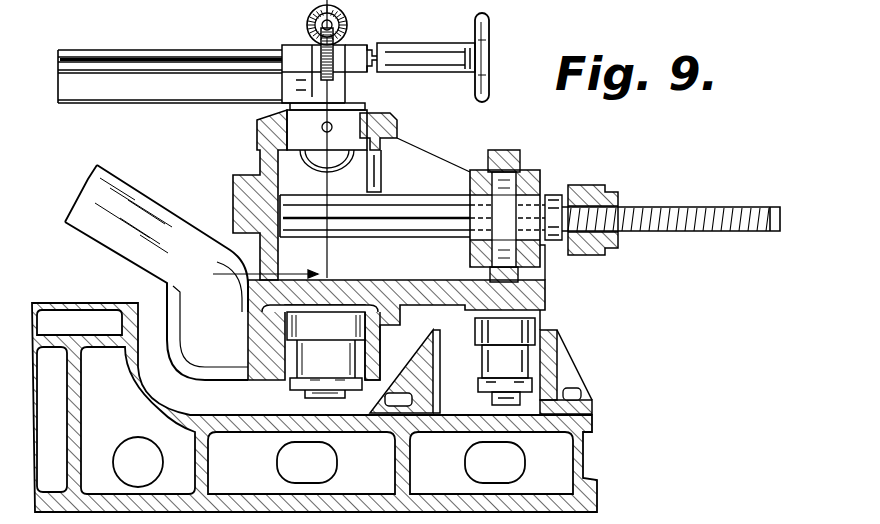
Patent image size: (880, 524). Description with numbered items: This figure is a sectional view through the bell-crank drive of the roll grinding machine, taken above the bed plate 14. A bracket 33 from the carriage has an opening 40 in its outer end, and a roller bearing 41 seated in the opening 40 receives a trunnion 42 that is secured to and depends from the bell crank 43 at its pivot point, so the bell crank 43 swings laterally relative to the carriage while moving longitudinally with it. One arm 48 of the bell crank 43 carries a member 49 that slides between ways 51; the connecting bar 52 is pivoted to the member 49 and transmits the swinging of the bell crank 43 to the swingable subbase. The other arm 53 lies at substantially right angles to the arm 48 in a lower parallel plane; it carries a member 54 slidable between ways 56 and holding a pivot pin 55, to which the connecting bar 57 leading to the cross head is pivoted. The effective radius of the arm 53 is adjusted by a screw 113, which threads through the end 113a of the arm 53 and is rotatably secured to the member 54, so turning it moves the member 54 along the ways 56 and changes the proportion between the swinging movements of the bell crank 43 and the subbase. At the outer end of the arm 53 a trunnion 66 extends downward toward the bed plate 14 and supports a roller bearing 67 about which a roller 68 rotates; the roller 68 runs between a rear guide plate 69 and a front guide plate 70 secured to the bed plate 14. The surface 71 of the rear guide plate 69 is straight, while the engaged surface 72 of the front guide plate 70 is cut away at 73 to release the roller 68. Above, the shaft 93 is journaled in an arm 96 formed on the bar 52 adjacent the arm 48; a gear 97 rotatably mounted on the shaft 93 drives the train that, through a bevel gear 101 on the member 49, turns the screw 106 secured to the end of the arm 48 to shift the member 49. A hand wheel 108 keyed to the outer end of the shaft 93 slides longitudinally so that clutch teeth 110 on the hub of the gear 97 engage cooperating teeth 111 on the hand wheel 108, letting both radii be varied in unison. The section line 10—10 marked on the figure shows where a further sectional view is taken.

The section line 10— 10 is at (260, 158).
The bed plate 14 is at (584, 466).
The bracket 33 is at (161, 222).
The opening 40 is at (281, 375).
The roller bearing 41 is at (353, 376).
The trunnion 42 is at (318, 346).
The bell crank 43 is at (401, 271).
The arm of the bell crank 48 is at (382, 130).
The member 49 is at (303, 142).
The ways 51 is at (363, 142).
The connecting bar 52 is at (165, 88).
The other arm of the bell crank 53 is at (444, 198).
The member 54 is at (542, 205).
The pivot pin 55 is at (505, 215).
The ways 56 is at (398, 212).
The connecting bar 57 is at (545, 256).
The trunnion 66 is at (512, 345).
The roller bearing 67 is at (527, 323).
The roller 68 is at (532, 373).
The rear guide plate 69 is at (425, 384).
The front guide plate 70 is at (565, 352).
The surface of the rear guide plate 71 is at (438, 357).
The engaged surface of the front guide plate 72 is at (518, 408).
The cut-away clearance 73 is at (593, 407).
The shaft 93 is at (166, 58).
The arm 96 is at (292, 85).
The gear 97 is at (320, 47).
The bevel gear 101 is at (308, 23).
The screw 106 is at (329, 133).
The hand wheel 108 is at (480, 30).
The clutch teeth 110 is at (369, 45).
The cooperating teeth 111 is at (377, 72).
The screw 113 is at (677, 212).
The end of the arm 113a is at (604, 190).